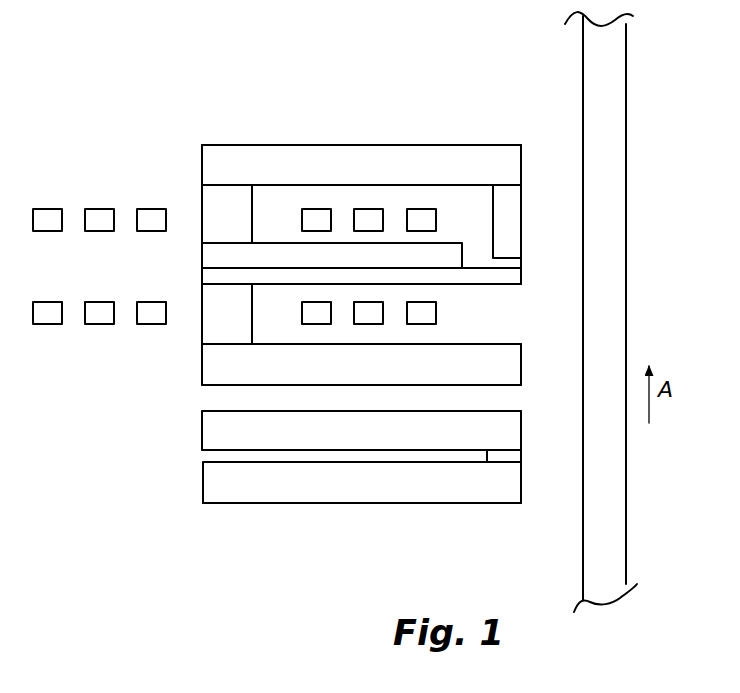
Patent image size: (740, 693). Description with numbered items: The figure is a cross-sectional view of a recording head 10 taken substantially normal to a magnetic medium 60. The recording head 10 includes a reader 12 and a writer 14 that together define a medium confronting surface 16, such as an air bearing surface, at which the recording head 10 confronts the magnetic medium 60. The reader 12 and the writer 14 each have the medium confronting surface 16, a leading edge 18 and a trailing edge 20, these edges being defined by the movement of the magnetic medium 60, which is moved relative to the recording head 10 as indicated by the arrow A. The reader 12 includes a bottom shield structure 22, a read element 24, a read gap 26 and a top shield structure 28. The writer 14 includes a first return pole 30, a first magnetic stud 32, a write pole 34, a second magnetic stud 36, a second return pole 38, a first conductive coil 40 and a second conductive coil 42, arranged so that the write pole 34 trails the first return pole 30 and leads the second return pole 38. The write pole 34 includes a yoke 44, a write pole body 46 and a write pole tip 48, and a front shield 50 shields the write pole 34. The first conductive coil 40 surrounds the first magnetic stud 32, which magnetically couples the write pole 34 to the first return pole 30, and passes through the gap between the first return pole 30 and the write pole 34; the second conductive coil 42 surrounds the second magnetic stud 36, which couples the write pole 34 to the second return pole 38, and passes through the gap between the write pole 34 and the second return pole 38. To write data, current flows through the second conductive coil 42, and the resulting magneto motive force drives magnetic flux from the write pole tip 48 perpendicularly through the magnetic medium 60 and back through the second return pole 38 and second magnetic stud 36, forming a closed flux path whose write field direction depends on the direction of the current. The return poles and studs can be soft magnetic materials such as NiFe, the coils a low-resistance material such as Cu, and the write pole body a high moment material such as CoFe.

The recording head 10 is at (141, 112).
The reader 12 is at (162, 446).
The writer 14 is at (191, 171).
The medium confronting surface 16 is at (529, 153).
The leading edge 18 is at (446, 514).
The trailing edge 20 is at (471, 126).
The bottom shield structure 22 is at (215, 490).
The read element 24 is at (508, 458).
The read gap 26 is at (198, 458).
The top shield structure 28 is at (215, 425).
The first return pole 30 is at (214, 368).
The first magnetic stud 32 is at (212, 325).
The write pole 34 is at (192, 244).
The second magnetic stud 36 is at (220, 212).
The second return pole 38 is at (217, 152).
The first conductive coil 40 is at (77, 329).
The second conductive coil 42 is at (77, 191).
The yoke 44 is at (283, 253).
The write pole body 46 is at (287, 277).
The write pole tip 48 is at (498, 276).
The front shield 50 is at (504, 241).
The magnetic medium 60 is at (640, 94).